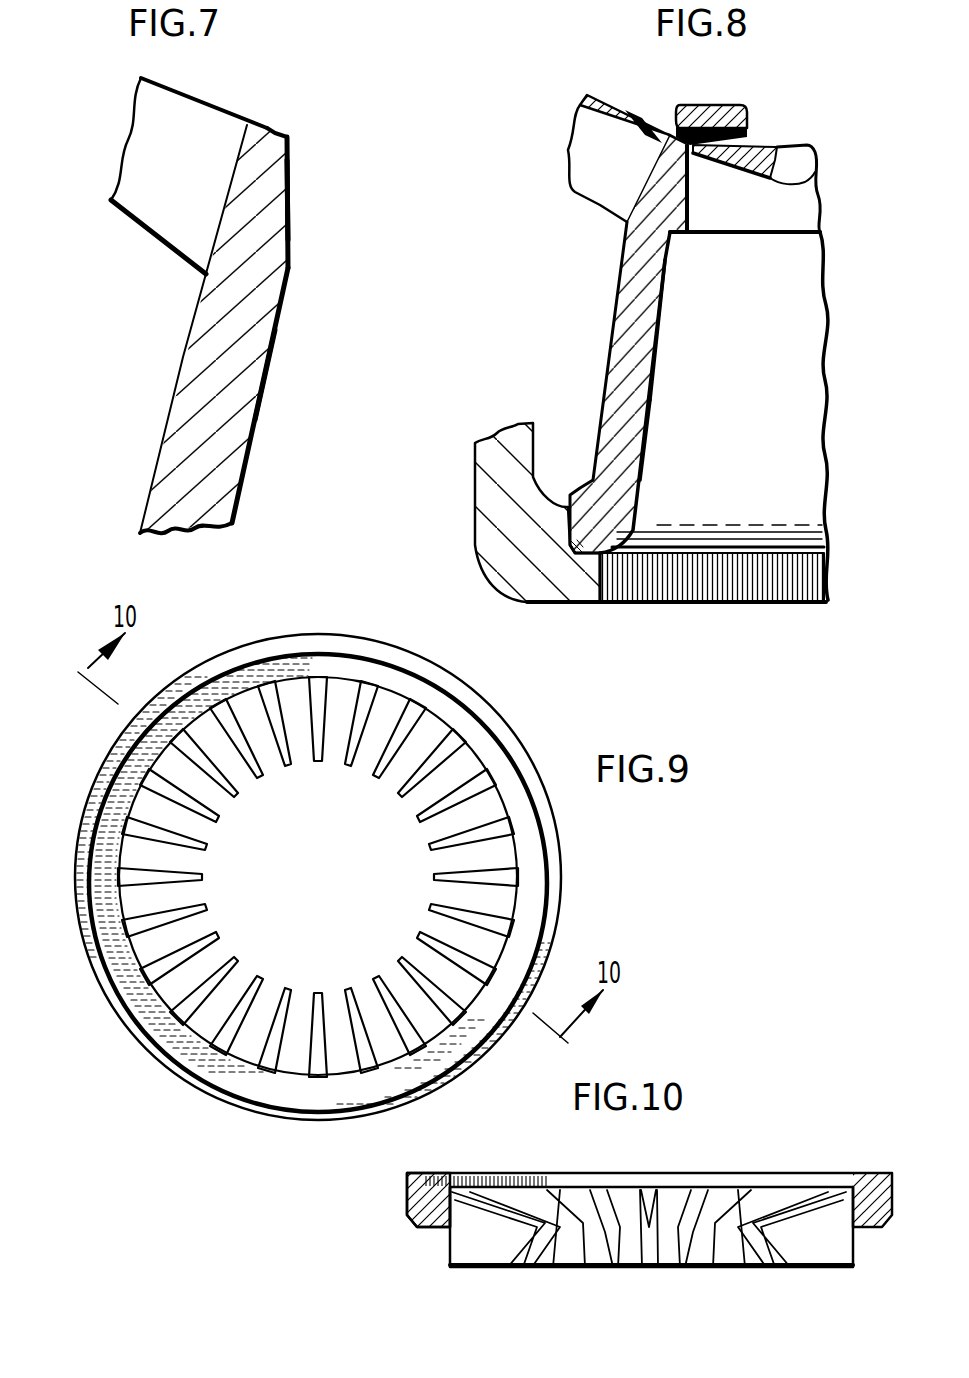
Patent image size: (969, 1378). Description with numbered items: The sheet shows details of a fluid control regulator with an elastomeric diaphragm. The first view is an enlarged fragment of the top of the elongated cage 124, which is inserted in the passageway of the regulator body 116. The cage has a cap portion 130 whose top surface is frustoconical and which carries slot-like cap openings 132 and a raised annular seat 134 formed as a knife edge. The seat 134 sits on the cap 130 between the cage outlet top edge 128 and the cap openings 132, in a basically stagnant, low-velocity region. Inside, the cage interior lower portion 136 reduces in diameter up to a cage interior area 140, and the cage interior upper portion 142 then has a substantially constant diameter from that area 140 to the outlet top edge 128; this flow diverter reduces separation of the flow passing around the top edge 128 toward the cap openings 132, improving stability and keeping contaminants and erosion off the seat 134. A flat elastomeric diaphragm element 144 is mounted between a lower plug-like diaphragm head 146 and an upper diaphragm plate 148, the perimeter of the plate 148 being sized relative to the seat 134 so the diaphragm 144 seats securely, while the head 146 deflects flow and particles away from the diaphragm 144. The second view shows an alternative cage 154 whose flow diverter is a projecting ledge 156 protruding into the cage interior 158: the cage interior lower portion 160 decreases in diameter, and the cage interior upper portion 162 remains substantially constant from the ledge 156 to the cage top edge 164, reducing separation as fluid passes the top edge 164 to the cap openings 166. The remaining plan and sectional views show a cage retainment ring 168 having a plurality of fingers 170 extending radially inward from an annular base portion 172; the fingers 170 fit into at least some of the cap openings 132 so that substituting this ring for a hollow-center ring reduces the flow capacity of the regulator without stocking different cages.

In FIG. 8, the regulator body 116 is at (496, 463).
In FIG. 7, the elongated cage 124 is at (207, 377).
In FIG. 7, the cage outlet top edge 128 is at (289, 134).
In FIG. 7, the cap portion 130 is at (210, 104).
In FIG. 7, the cap openings 132 is at (147, 158).
In FIG. 7, the raised annular seat 134 is at (273, 128).
In FIG. 7, the cage interior lower portion 136 is at (275, 399).
In FIG. 7, the cage interior area 140 is at (290, 268).
In FIG. 7, the cage interior upper portion 142 is at (304, 194).
In FIG. 8, the flat elastomeric diaphragm element 144 is at (612, 102).
In FIG. 8, the plug-like diaphragm head 146 is at (810, 180).
In FIG. 8, the upper diaphragm plate 148 is at (708, 115).
In FIG. 8, the cage 154 is at (617, 300).
In FIG. 8, the projecting ledge 156 is at (677, 240).
In FIG. 8, the cage interior 158 is at (677, 370).
In FIG. 8, the cage interior lower portion 160 is at (672, 400).
In FIG. 8, the cage interior upper portion 162 is at (698, 193).
In FIG. 8, the cage top edge 164 is at (800, 145).
In FIG. 8, the cap openings 166 is at (580, 160).
In FIG. 9, the cage retainment ring 168 is at (339, 622).
In FIG. 10, the cage retainment ring 168 is at (789, 1152).
In FIG. 9, the fingers 170 is at (425, 808).
In FIG. 10, the fingers 170 is at (488, 1240).
In FIG. 9, the annular base portion 172 is at (497, 718).
In FIG. 10, the annular base portion 172 is at (407, 1185).